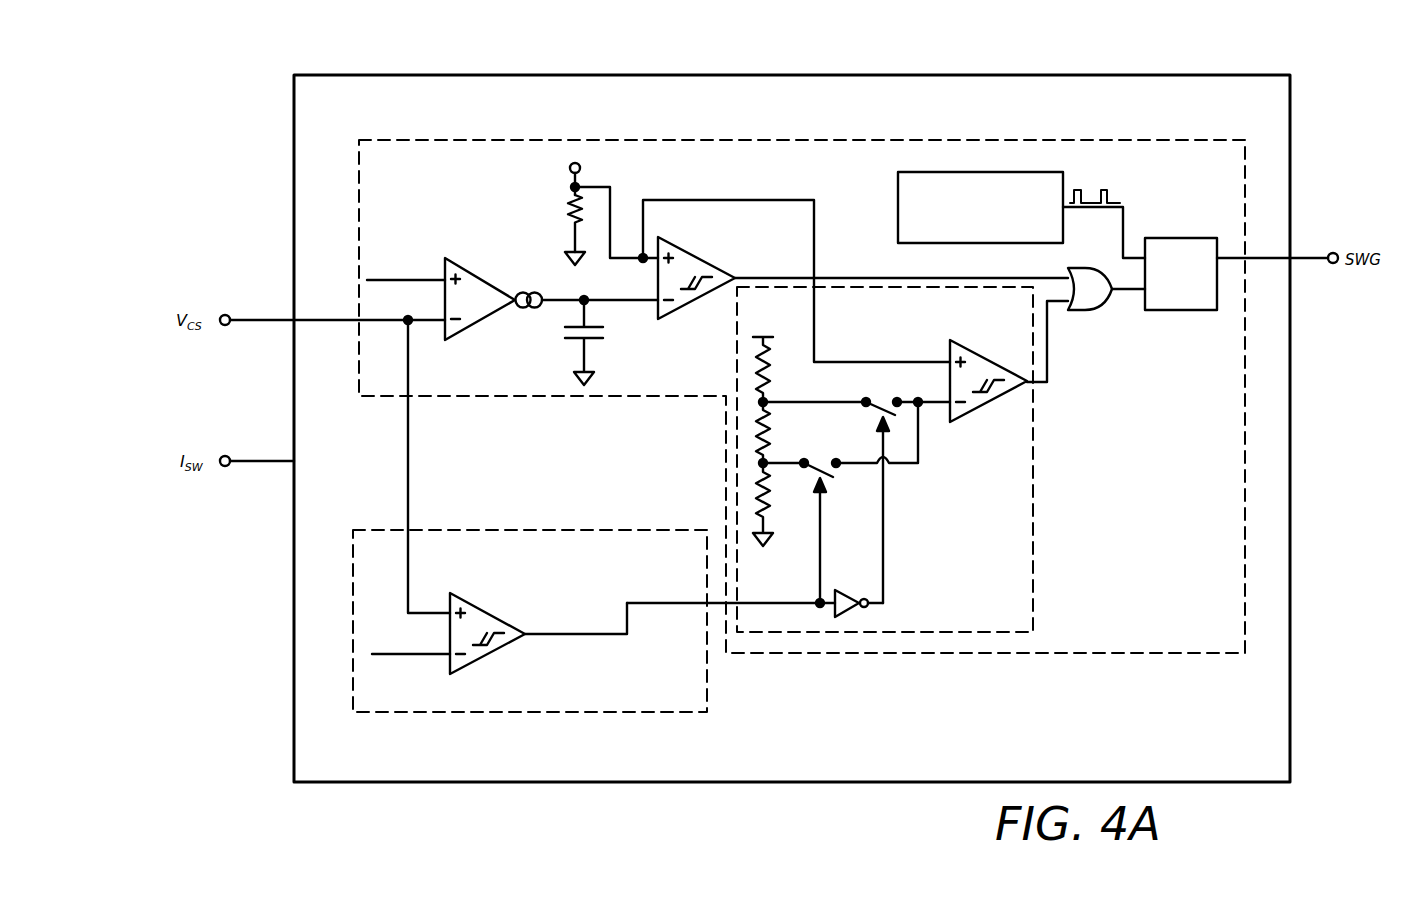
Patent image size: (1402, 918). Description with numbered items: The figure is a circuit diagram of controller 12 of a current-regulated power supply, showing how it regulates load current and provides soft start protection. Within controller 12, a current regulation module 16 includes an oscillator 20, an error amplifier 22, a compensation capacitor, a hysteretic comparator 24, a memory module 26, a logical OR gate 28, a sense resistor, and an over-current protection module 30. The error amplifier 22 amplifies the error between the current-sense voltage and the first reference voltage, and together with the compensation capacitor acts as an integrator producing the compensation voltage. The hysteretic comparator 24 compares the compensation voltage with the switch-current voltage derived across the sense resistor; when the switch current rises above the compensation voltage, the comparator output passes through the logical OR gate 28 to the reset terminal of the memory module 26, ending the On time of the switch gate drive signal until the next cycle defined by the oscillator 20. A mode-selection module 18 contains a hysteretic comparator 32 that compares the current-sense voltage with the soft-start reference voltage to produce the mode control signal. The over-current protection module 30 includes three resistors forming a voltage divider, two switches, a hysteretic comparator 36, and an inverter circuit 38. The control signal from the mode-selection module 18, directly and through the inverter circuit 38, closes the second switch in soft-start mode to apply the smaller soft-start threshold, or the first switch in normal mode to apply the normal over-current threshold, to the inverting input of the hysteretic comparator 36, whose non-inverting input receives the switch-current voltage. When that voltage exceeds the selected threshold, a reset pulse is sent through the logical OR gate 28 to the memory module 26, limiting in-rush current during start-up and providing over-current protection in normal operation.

The controller 12 is at (294, 143).
The current regulation module 16 is at (523, 140).
The mode-selection module 18 is at (390, 530).
The oscillator 20 is at (897, 208).
The error amplifier 22 is at (468, 266).
The hysteretic comparator 24 is at (690, 253).
The memory module 26 is at (1160, 238).
The logical OR gate 28 is at (1104, 224).
The over-current protection module 30 is at (1033, 503).
The hysteretic comparator 32 is at (488, 607).
The hysteretic comparator 36 is at (992, 362).
The inverter circuit 38 is at (843, 592).